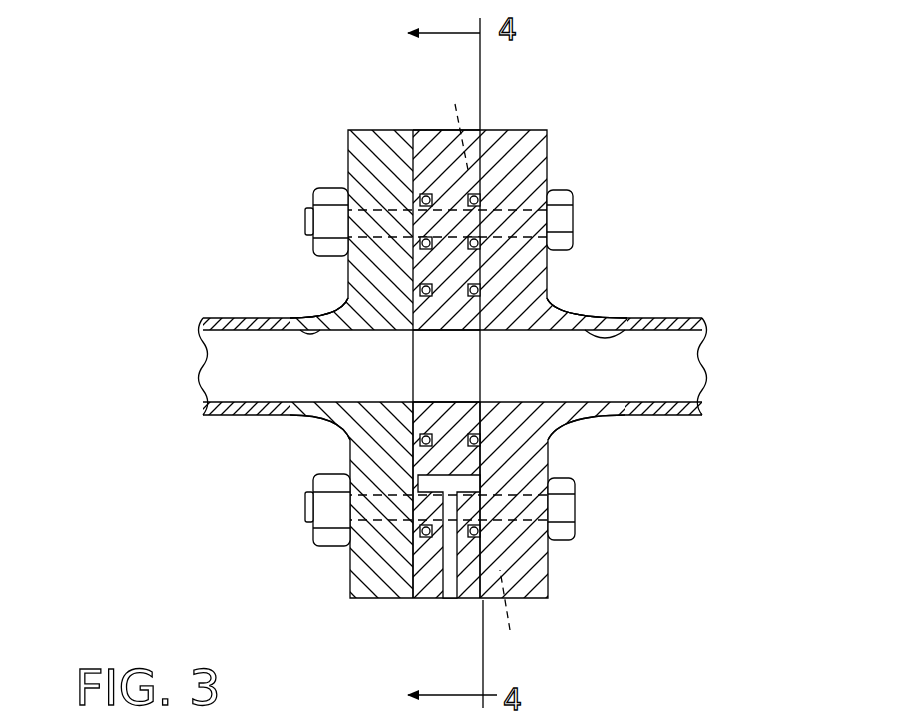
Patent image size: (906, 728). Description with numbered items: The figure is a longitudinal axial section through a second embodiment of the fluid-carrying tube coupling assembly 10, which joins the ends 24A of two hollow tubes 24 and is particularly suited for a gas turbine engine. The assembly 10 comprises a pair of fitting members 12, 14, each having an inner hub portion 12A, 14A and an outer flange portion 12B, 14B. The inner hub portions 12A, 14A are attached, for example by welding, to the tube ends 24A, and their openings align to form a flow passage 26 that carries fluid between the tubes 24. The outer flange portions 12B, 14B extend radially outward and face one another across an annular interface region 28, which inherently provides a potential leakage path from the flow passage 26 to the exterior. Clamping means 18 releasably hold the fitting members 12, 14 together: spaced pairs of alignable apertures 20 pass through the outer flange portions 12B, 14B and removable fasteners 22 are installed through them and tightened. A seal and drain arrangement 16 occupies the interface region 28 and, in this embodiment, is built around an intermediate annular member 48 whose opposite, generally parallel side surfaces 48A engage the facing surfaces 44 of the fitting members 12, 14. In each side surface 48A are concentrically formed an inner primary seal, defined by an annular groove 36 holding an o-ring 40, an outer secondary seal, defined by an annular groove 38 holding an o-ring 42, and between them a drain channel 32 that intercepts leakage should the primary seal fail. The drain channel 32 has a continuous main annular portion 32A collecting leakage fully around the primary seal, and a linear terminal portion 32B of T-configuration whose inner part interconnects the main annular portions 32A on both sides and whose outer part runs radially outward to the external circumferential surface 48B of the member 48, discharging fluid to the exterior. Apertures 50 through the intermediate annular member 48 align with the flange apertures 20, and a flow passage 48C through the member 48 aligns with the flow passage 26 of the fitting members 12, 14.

The tube coupling assembly 10 is at (592, 92).
The fitting member 12 is at (345, 163).
The inner hub portion 12A is at (345, 310).
The outer flange portion 12B is at (355, 470).
The fitting member 14 is at (552, 148).
The inner hub portion 14A is at (599, 413).
The outer flange portion 14B is at (550, 572).
The seal and drain arrangement 16 is at (388, 467).
The clamping means 18 is at (577, 215).
The apertures 20 is at (576, 200).
The fasteners 22 is at (313, 224).
The hollow tubes 24 is at (692, 314).
The tube ends 24A is at (293, 318).
The flow passage 26 is at (646, 320).
The annular interface region 28 is at (471, 374).
The drain channel 32 is at (418, 200).
The main annular portion 32A is at (480, 247).
The linear terminal portion 32B is at (448, 598).
The annular groove 36 is at (548, 297).
The annular groove 38 is at (430, 130).
The o-ring 40 is at (383, 443).
The o-ring 42 is at (395, 600).
The facing surfaces 44 is at (413, 349).
The intermediate annular member 48 is at (470, 603).
The side surfaces 48A is at (382, 130).
The external circumferential surface 48B is at (420, 130).
The flow passage 48C is at (481, 345).
The apertures 50 is at (483, 369).